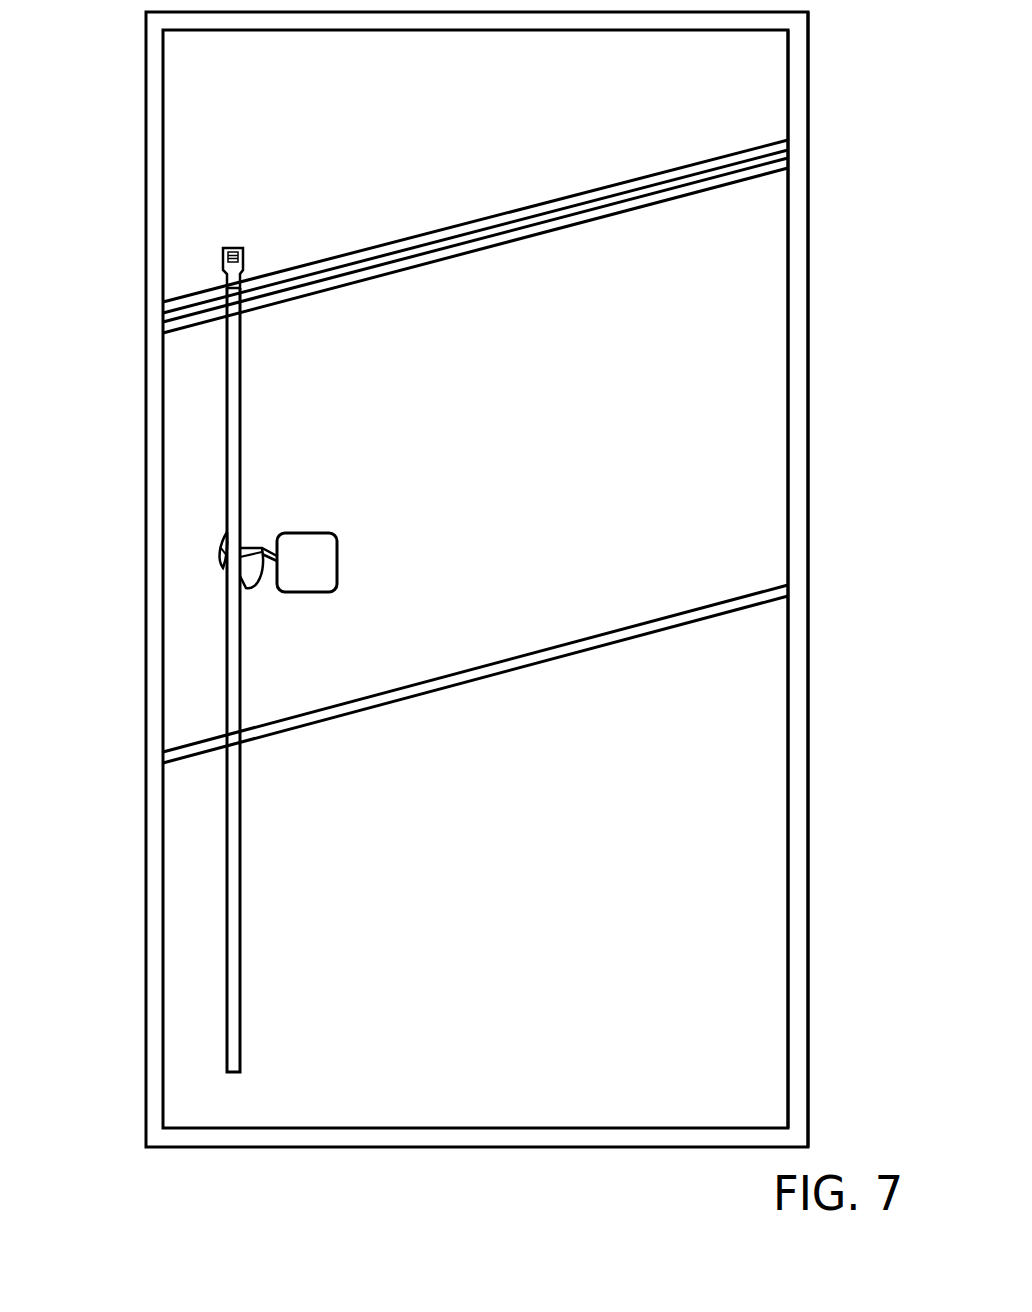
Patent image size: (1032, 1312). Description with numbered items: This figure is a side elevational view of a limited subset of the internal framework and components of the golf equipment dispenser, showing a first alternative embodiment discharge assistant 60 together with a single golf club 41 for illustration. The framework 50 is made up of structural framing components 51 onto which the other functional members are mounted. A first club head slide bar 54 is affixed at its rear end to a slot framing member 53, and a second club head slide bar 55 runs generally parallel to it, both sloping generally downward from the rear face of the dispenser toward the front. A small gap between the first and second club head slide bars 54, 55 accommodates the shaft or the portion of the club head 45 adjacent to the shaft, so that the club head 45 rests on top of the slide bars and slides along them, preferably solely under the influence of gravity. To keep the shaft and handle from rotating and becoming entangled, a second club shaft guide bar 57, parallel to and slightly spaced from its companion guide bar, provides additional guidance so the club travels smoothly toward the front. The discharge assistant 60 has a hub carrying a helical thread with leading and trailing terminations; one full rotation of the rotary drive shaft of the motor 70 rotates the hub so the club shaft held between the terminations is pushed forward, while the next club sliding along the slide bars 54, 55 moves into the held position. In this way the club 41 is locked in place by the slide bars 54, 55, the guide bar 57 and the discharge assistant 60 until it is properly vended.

The golf club 41 is at (243, 910).
The club head 45 is at (243, 258).
The framework 50 is at (818, 555).
The structural framing components 51 is at (157, 898).
The slot framing member 53 is at (795, 217).
The first club head slide bar 54 is at (410, 263).
The second club head slide bar 55 is at (367, 258).
The second club shaft guide bar 57 is at (655, 632).
The first alternative embodiment discharge assistant 60 is at (223, 528).
The motor 70 is at (277, 583).